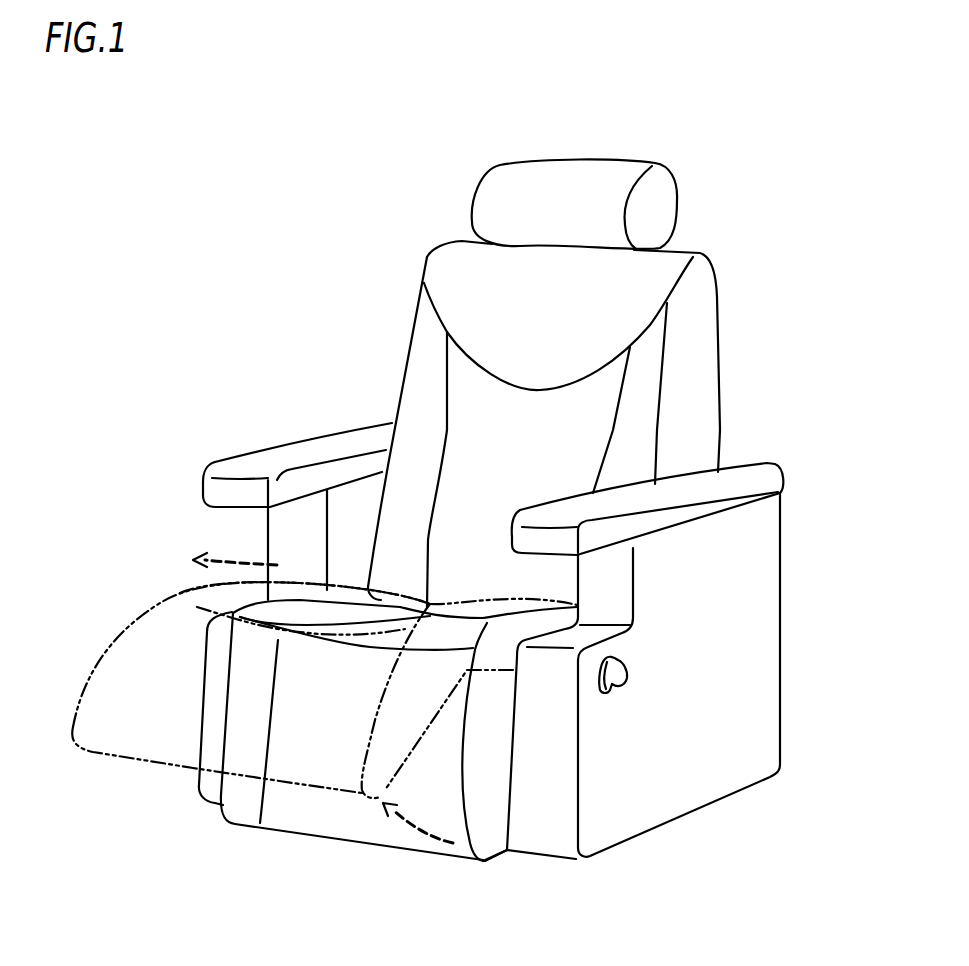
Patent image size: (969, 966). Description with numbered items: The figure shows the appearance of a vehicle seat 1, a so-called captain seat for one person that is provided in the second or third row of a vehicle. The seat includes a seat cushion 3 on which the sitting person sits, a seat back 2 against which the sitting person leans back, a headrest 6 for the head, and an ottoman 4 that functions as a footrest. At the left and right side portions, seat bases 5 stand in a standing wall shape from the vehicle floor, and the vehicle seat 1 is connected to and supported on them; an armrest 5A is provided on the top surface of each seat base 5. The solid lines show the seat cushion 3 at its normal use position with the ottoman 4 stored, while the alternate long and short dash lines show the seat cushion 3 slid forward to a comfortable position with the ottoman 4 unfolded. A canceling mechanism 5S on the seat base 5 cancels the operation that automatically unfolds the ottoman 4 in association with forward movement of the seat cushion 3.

The vehicle seat 1 is at (278, 295).
The seat back 2 is at (518, 312).
The seat cushion 3 is at (305, 613).
The ottoman 4 is at (297, 713).
The seat base 5 is at (662, 704).
The armrest 5A is at (692, 505).
The canceling mechanism 5S is at (617, 692).
The headrest 6 is at (568, 190).